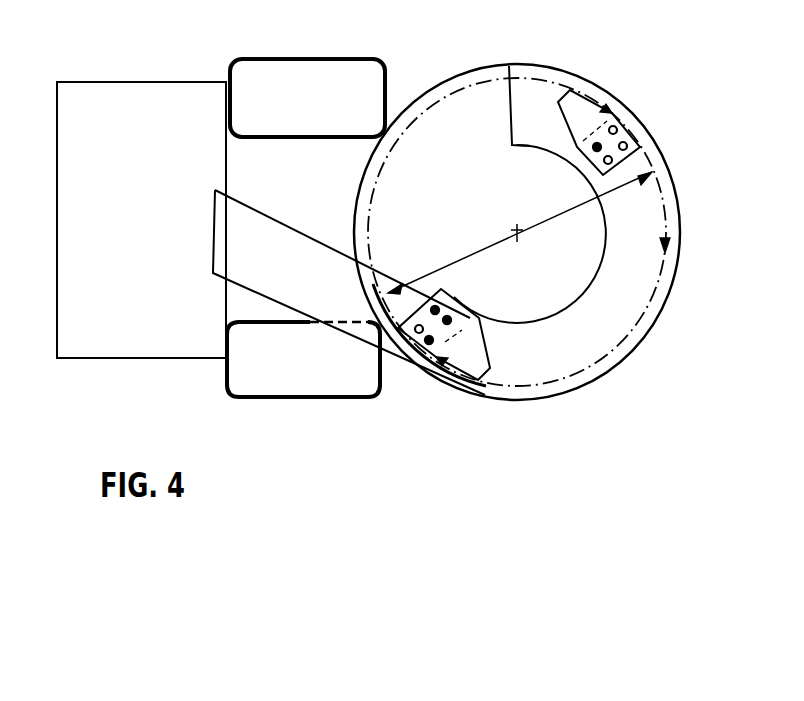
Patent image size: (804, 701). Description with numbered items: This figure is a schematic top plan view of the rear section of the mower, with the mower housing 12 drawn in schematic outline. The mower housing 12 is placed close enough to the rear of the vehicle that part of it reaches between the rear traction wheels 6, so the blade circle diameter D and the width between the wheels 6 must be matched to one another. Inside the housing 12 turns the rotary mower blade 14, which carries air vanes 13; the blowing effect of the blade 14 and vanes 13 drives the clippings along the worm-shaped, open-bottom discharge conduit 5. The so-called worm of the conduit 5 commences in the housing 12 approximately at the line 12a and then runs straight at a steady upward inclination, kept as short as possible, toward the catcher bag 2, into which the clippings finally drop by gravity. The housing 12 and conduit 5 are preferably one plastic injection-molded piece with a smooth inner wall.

The catcher bag 2 is at (78, 335).
The discharge conduit 5 is at (285, 262).
The rear traction wheels 6 is at (292, 82).
The mower housing 12 is at (610, 325).
The line 12a is at (514, 103).
The air vanes 13 is at (580, 120).
The rotary mower blade 14 is at (492, 272).
The blade circle diameter D is at (636, 182).